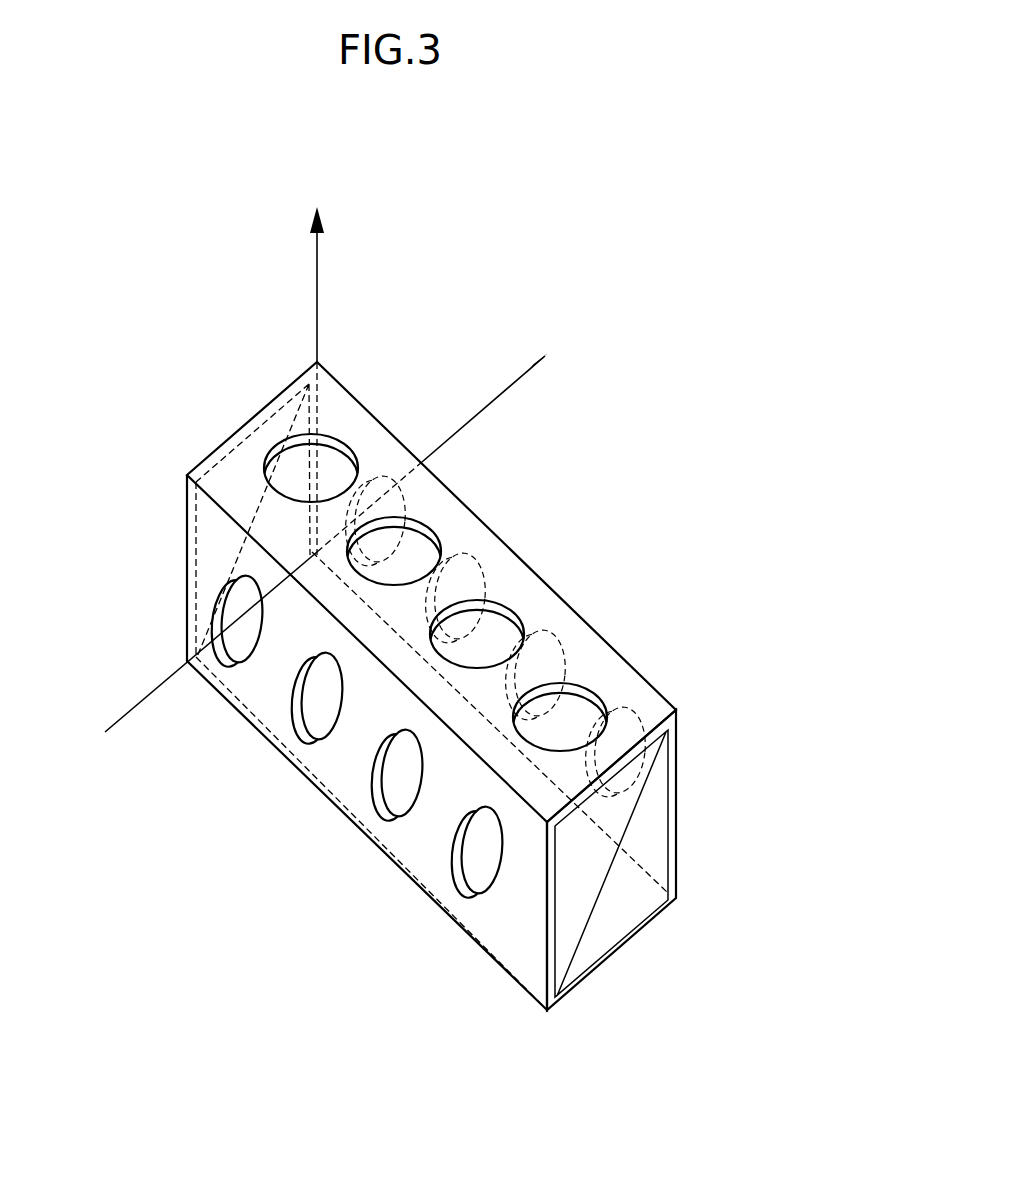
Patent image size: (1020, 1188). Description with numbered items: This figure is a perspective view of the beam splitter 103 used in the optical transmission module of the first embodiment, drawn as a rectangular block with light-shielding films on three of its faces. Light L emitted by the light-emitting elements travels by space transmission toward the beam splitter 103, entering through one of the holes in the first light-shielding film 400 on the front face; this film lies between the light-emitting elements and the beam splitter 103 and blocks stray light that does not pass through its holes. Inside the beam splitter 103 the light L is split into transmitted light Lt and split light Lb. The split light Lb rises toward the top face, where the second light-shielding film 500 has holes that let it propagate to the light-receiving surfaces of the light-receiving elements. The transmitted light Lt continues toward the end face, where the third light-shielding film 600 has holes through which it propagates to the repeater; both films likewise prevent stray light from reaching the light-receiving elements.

The beam splitter 103 is at (478, 667).
The first light-shielding film 400 is at (520, 933).
The second light-shielding film 500 is at (617, 676).
The third light-shielding film 600 is at (680, 868).
The light L is at (142, 703).
The split light Lb is at (318, 278).
The transmitted light Lt is at (450, 437).